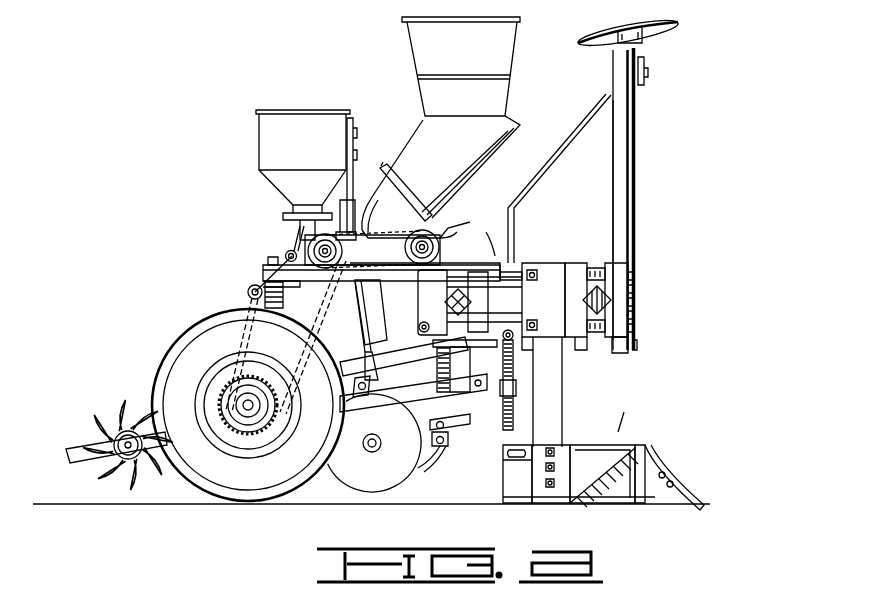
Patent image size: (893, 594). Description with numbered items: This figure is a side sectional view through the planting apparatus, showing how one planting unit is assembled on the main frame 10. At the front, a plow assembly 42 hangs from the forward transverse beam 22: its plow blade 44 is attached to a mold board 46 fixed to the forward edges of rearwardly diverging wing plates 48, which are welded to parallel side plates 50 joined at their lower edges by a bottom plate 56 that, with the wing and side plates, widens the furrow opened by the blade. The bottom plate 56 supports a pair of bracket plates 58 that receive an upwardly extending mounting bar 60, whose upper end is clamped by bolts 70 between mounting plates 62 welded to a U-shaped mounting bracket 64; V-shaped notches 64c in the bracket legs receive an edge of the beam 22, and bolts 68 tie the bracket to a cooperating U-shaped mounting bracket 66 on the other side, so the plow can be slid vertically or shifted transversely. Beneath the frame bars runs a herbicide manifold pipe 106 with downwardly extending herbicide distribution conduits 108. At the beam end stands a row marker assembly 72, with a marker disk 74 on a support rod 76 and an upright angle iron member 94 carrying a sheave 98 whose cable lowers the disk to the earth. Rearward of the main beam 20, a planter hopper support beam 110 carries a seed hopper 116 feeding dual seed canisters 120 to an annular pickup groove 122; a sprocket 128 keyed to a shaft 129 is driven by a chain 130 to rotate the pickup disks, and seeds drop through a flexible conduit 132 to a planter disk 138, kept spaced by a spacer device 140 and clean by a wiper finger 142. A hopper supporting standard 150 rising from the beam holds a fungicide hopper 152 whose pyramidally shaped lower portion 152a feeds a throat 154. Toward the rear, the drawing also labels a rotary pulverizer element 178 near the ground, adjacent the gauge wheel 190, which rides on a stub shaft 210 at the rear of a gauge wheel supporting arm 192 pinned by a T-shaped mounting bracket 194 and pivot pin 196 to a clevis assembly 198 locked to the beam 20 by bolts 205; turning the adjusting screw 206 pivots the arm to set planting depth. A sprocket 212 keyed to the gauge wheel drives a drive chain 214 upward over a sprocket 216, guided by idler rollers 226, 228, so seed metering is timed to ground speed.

The main frame 10 is at (491, 245).
The main beam 20 is at (443, 289).
The forward transverse beam 22 is at (612, 300).
The plow assembly 42 is at (618, 432).
The plow blade 44 is at (688, 493).
The mold board 46 is at (642, 504).
The wing plates 48 is at (628, 448).
The side plates 50 is at (504, 488).
The bottom plate 56 is at (520, 504).
The bracket plates 58 is at (565, 446).
The mounting bar 60 is at (540, 412).
The mounting plates 62 is at (556, 299).
The U-shaped mounting bracket 64 is at (576, 262).
The V-shaped notches 64c is at (580, 345).
The cooperating U-shaped mounting bracket 66 is at (618, 265).
The bolts 68 is at (636, 283).
The bolts 70 is at (531, 268).
The row marker assembly 72 is at (640, 158).
The marker disk 74 is at (662, 38).
The support rod 76 is at (580, 140).
The angle iron member 94 is at (612, 186).
The sheave 98 is at (648, 80).
The herbicide manifold pipe 106 is at (540, 345).
The herbicide distribution conduits 108 is at (508, 396).
The planter hopper support beam 110 is at (60, 481).
The seed hopper 116 is at (486, 54).
The seed canisters 120 is at (436, 137).
The pickup groove 122 is at (381, 163).
The sprocket 128 is at (372, 249).
The shaft 129 is at (442, 232).
The chain 130 is at (404, 208).
The flexible conduit 132 is at (358, 320).
The planter disk 138 is at (388, 476).
The spacer device 140 is at (428, 465).
The wiper finger 142 is at (358, 410).
The hopper supporting standard 150 is at (356, 145).
The fungicide hopper 152 is at (316, 144).
The pyramidally shaped lower portion 152a is at (282, 192).
The throat 154 is at (290, 214).
The rotary cultivator 178 is at (106, 417).
The gauge wheel 190 is at (186, 337).
The gauge wheel supporting arm 192 is at (368, 350).
The T-shaped mounting bracket 194 is at (424, 365).
The pivot pin 196 is at (417, 326).
The clevis assembly 198 is at (452, 274).
The bolts 205 is at (506, 292).
The adjusting screw 206 is at (418, 280).
The stub shaft 210 is at (248, 420).
The sprocket 212 is at (255, 383).
The drive chain 214 is at (248, 292).
The sprocket 216 is at (381, 282).
The idler roller 226 is at (289, 250).
The idler roller 228 is at (252, 285).